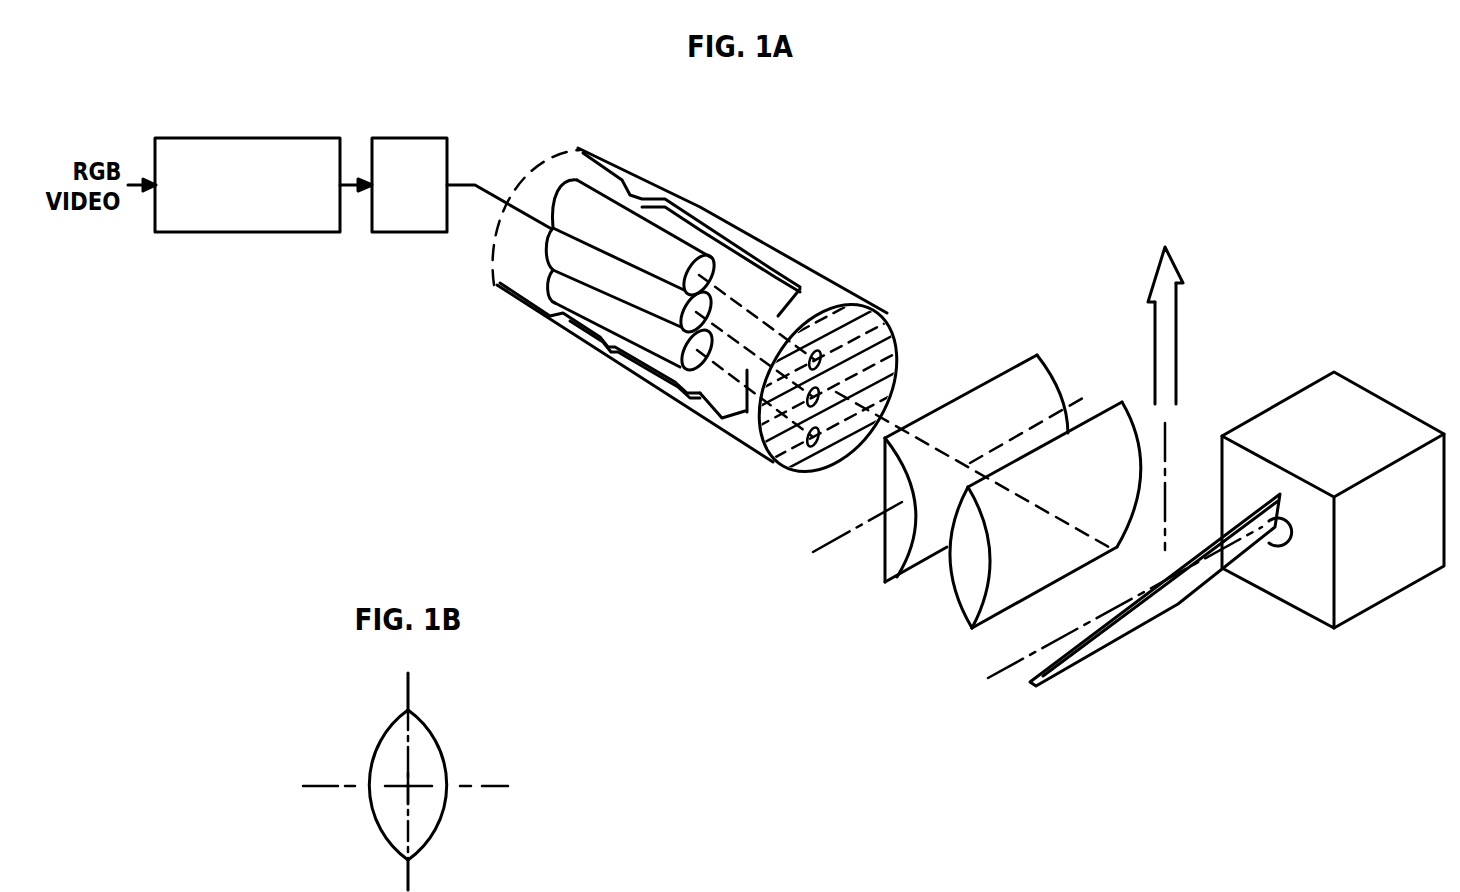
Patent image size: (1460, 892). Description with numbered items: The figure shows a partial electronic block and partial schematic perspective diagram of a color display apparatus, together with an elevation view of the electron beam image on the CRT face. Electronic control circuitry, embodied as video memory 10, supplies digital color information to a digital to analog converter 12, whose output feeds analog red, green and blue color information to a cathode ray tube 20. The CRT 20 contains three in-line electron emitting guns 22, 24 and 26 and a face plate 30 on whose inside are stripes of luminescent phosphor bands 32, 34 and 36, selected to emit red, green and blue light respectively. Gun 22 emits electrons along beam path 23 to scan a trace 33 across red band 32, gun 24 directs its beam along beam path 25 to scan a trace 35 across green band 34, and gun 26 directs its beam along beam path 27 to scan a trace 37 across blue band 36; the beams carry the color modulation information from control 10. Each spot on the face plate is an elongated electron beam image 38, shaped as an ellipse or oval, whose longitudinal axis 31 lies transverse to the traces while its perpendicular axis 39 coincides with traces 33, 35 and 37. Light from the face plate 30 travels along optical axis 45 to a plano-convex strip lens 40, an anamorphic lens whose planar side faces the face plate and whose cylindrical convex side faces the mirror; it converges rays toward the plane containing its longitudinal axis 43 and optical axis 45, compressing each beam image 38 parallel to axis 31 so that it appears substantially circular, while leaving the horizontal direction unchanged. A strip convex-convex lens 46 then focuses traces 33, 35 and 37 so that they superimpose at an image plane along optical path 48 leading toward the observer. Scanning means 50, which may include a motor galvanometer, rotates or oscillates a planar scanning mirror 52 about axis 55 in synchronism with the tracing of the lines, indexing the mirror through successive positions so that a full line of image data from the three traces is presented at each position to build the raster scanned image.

In FIG. 1A, the electronic control circuitry 10 is at (222, 237).
In FIG. 1A, the digital to analog converter 12 is at (396, 237).
In FIG. 1A, the cathode ray tube 20 is at (602, 143).
In FIG. 1A, the electron emitting gun 22 is at (647, 217).
In FIG. 1A, the beam path 23 is at (732, 330).
In FIG. 1A, the electron emitting gun 24 is at (548, 248).
In FIG. 1A, the beam path 25 is at (737, 327).
In FIG. 1A, the electron emitting gun 26 is at (560, 338).
In FIG. 1A, the beam path 27 is at (673, 403).
In FIG. 1A, the face plate 30 is at (832, 327).
In FIG. 1B, the longitudinal axis 31 is at (410, 690).
In FIG. 1A, the phosphor band 32 is at (857, 295).
In FIG. 1A, the trace 33 is at (872, 314).
In FIG. 1A, the phosphor band 34 is at (890, 340).
In FIG. 1A, the trace 35 is at (878, 365).
In FIG. 1A, the phosphor band 36 is at (832, 453).
In FIG. 1A, the trace 37 is at (765, 448).
In FIG. 1A, the electron beam image 38 is at (808, 355).
In FIG. 1B, the electron beam image 38 is at (450, 750).
In FIG. 1B, the axis of beam image 39 is at (498, 790).
In FIG. 1A, the strip lens 40 is at (1012, 366).
In FIG. 1A, the longitudinal axis 43 is at (822, 550).
In FIG. 1A, the optical axis 45 is at (880, 410).
In FIG. 1A, the strip convex-convex lens 46 is at (950, 600).
In FIG. 1A, the optical path 48 is at (1183, 319).
In FIG. 1A, the scanning means 50 is at (1280, 605).
In FIG. 1A, the planar scanning mirror 52 is at (1120, 643).
In FIG. 1A, the axis 55 is at (993, 680).